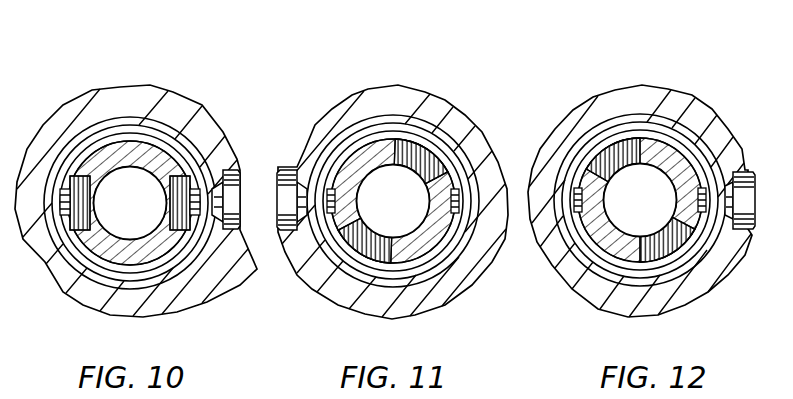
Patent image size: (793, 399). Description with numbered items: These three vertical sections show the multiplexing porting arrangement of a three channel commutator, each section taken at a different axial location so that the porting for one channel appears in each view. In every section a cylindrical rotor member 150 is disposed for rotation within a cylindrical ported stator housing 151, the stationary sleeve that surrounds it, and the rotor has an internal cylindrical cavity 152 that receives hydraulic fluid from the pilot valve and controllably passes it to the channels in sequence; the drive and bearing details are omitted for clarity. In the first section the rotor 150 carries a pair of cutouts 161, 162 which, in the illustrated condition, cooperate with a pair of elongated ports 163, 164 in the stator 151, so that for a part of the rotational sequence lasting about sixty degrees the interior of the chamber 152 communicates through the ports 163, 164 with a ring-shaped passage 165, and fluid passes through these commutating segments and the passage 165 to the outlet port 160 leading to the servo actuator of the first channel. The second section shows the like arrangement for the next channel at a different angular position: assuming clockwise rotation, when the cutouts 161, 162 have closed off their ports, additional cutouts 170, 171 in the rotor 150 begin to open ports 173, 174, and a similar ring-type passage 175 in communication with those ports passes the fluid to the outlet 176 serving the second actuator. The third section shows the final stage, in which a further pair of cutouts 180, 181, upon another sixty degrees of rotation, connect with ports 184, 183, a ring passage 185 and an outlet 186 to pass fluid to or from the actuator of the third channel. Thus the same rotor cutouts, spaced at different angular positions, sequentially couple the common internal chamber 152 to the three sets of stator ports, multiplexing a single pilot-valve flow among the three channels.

In FIG. 10, the rotor member 150 is at (140, 148).
In FIG. 11, the rotor member 150 is at (368, 154).
In FIG. 12, the rotor member 150 is at (568, 290).
In FIG. 10, the cylindrical ported stator housing 151 is at (123, 148).
In FIG. 11, the cylindrical ported stator housing 151 is at (391, 160).
In FIG. 12, the cylindrical ported stator housing 151 is at (627, 133).
In FIG. 10, the internal cylindrical cavity 152 is at (103, 214).
In FIG. 11, the internal cylindrical cavity 152 is at (367, 212).
In FIG. 12, the internal cylindrical cavity 152 is at (614, 212).
In FIG. 10, the outlet port 160 is at (210, 239).
In FIG. 10, the cutout 161 is at (87, 195).
In FIG. 10, the cutout 162 is at (170, 172).
In FIG. 10, the elongated port 163 is at (53, 235).
In FIG. 10, the elongated port 164 is at (217, 269).
In FIG. 10, the ring-shaped passage 165 is at (73, 154).
In FIG. 11, the cutout 170 is at (323, 295).
In FIG. 11, the cutout 171 is at (433, 149).
In FIG. 11, the port 173 is at (282, 205).
In FIG. 11, the port 174 is at (472, 170).
In FIG. 11, the ring-type passage 175 is at (432, 265).
In FIG. 11, the outlet 176 is at (280, 207).
In FIG. 12, the cutout 180 is at (600, 150).
In FIG. 12, the cutout 181 is at (672, 245).
In FIG. 12, the port 183 is at (534, 236).
In FIG. 12, the port 184 is at (704, 215).
In FIG. 12, the passage 185 is at (662, 128).
In FIG. 12, the outlet 186 is at (750, 172).